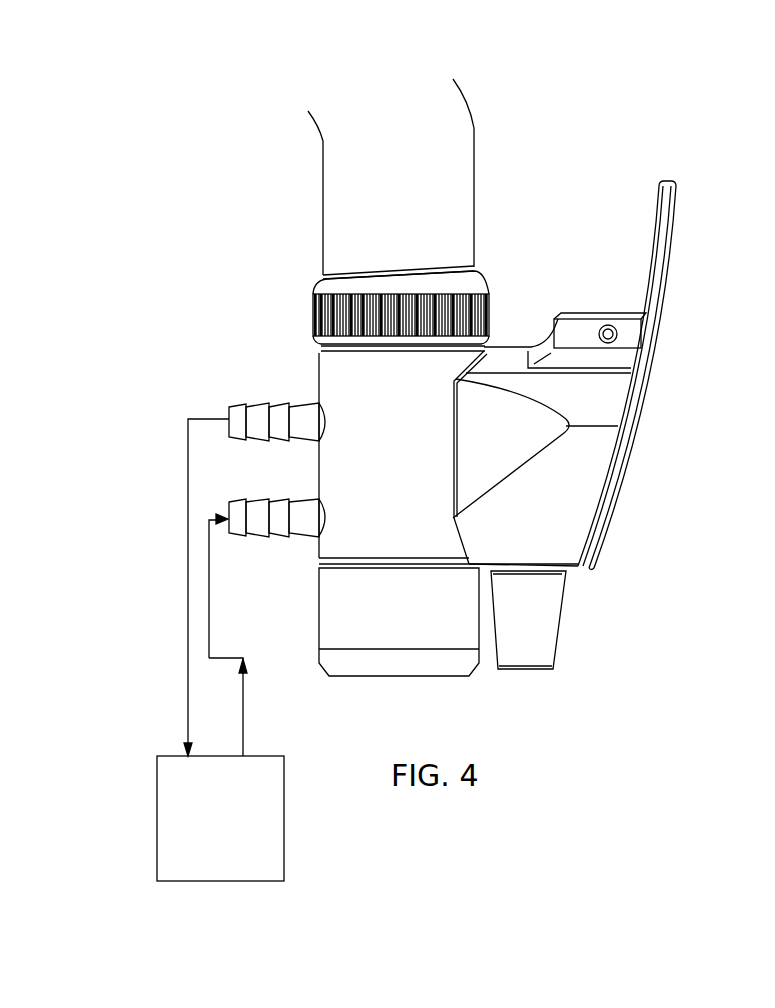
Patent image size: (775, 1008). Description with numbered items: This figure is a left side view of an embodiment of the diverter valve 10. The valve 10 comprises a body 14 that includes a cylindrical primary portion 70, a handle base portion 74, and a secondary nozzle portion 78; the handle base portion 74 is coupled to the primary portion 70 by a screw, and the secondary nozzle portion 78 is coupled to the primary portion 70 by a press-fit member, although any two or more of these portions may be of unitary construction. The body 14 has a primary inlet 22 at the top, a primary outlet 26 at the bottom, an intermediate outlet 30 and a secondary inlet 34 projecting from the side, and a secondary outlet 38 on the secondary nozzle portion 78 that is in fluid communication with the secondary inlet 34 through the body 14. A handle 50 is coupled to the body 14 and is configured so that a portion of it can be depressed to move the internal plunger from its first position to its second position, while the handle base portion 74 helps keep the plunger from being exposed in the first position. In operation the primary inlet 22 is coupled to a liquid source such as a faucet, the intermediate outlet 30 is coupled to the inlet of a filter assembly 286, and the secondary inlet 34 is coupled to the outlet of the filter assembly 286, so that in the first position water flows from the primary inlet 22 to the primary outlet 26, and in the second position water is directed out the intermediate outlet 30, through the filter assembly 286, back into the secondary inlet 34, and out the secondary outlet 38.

The diverter valve 10 is at (262, 223).
The primary inlet 22 is at (478, 277).
The cylindrical primary portion 70 is at (337, 367).
The intermediate outlet 30 is at (226, 410).
The secondary inlet 34 is at (227, 512).
The filter assembly 286 is at (283, 833).
The body 14 is at (371, 504).
The handle base portion 74 is at (550, 495).
The handle 50 is at (677, 200).
The primary outlet 26 is at (442, 677).
The secondary nozzle portion 78 is at (533, 630).
The secondary outlet 38 is at (537, 670).